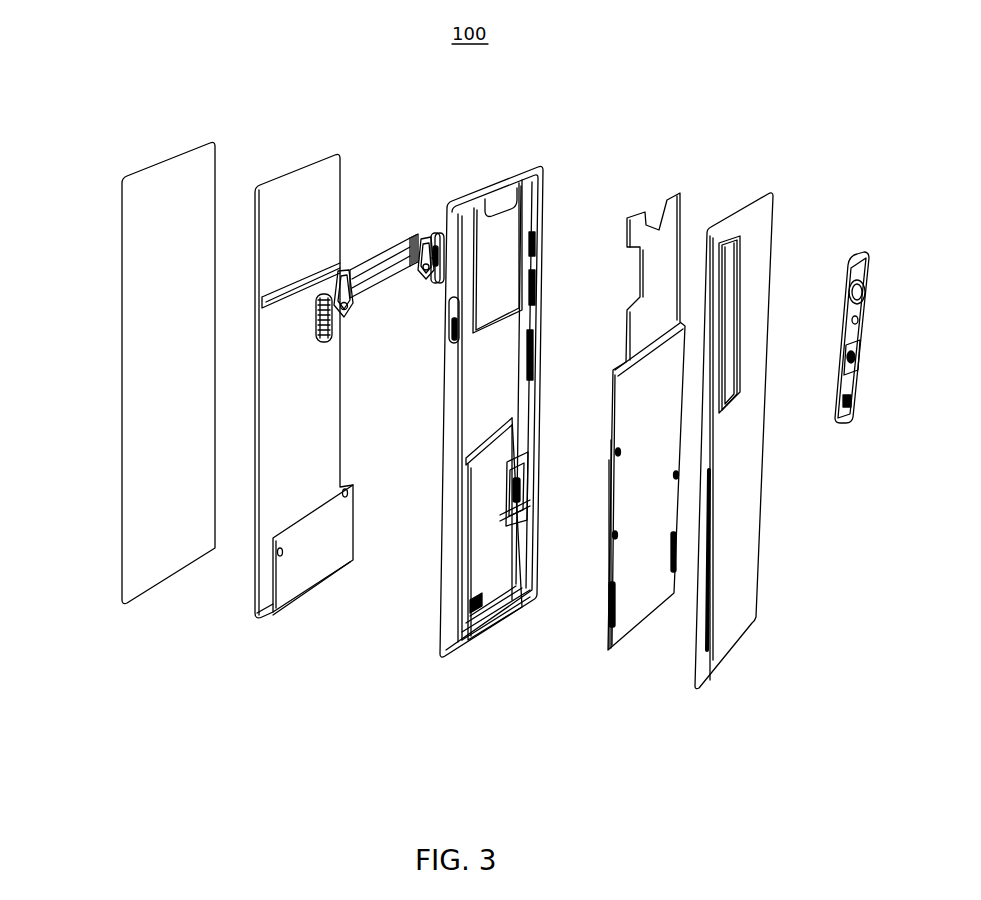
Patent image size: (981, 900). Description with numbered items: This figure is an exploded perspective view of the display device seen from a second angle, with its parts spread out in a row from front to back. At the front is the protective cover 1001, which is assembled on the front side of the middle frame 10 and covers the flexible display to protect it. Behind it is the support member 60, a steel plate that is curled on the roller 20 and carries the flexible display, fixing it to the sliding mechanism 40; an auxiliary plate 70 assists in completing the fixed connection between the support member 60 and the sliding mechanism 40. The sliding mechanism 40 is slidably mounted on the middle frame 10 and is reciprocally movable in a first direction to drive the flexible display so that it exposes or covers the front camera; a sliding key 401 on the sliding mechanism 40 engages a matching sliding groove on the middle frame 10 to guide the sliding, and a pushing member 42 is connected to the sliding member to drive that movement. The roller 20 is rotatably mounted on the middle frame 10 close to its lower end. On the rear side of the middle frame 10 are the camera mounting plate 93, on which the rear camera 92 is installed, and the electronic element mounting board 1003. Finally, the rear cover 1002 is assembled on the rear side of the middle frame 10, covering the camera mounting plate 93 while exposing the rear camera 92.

The middle frame 10 is at (494, 423).
The roller 20 is at (503, 633).
The sliding mechanism 40 is at (395, 237).
The sliding key 401 is at (403, 278).
The pushing member 42 is at (340, 325).
The support member 60 is at (290, 180).
The auxiliary plate 70 is at (252, 313).
The rear camera 92 is at (853, 250).
The camera mounting plate 93 is at (659, 432).
The protective cover 1001 is at (147, 217).
The rear cover 1002 is at (760, 193).
The electronic element mounting board 1003 is at (627, 617).